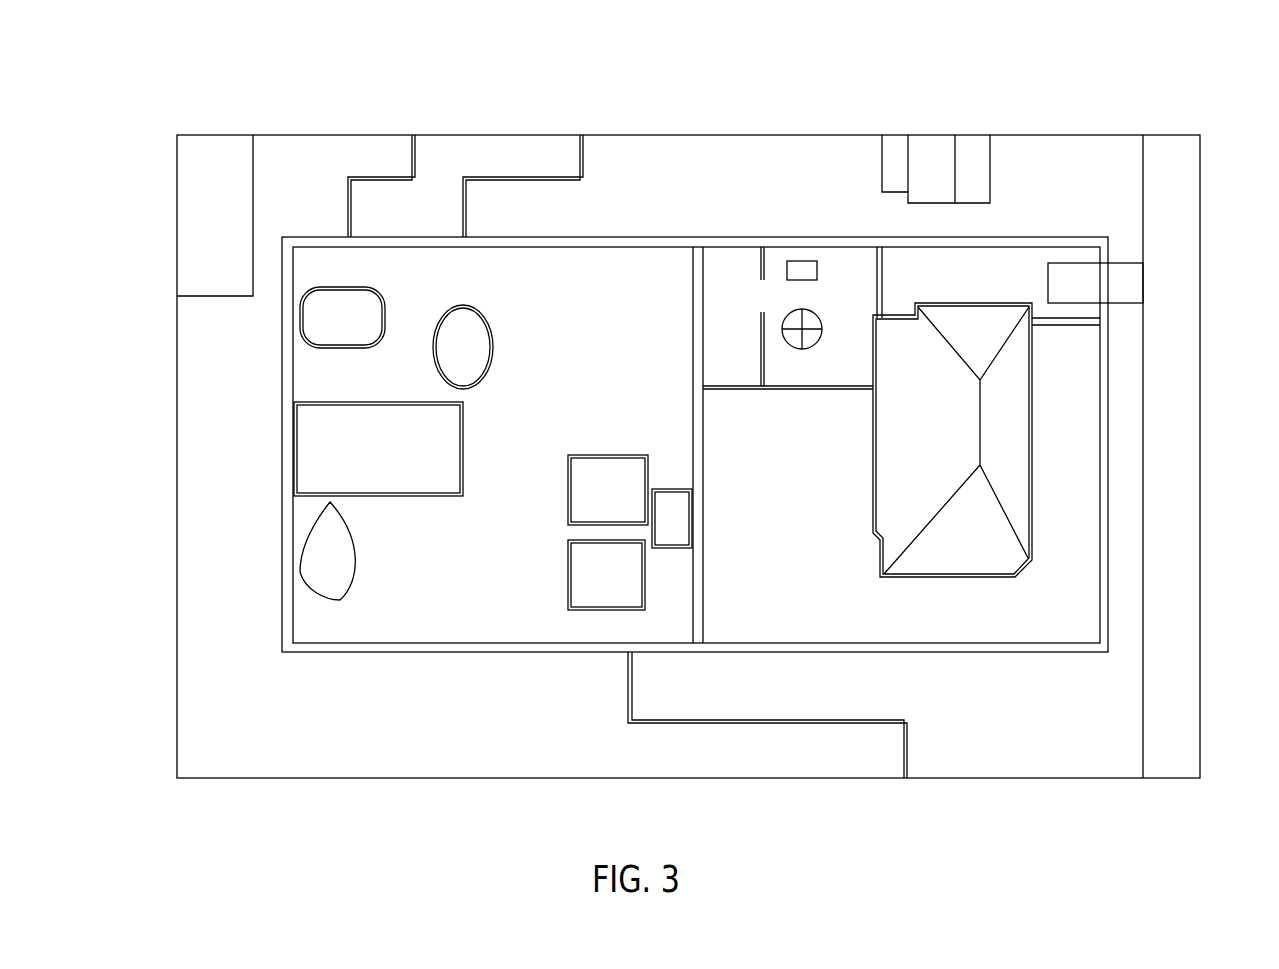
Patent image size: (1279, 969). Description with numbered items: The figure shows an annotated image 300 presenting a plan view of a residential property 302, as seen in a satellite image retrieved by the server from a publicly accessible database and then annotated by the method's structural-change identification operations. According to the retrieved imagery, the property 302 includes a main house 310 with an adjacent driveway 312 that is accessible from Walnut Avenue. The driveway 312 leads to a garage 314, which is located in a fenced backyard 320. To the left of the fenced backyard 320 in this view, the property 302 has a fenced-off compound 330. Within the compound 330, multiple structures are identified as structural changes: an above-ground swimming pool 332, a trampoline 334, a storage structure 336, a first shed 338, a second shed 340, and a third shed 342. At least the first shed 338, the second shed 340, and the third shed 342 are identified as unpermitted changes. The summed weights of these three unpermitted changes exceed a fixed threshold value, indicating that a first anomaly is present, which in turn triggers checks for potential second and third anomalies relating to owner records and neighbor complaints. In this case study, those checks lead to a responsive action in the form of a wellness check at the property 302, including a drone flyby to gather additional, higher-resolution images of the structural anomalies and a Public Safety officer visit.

The annotated image 300 is at (116, 84).
The residential property 302 is at (727, 98).
The main house 310 is at (983, 327).
The driveway 312 is at (1150, 281).
The garage 314 is at (724, 262).
The fenced backyard 320 is at (841, 420).
The fenced-off compound 330 is at (402, 592).
The above-ground swimming pool 332 is at (338, 287).
The trampoline 334 is at (494, 347).
The storage structure 336 is at (465, 447).
The first shed 338 is at (608, 455).
The second shed 340 is at (673, 512).
The third shed 342 is at (567, 575).